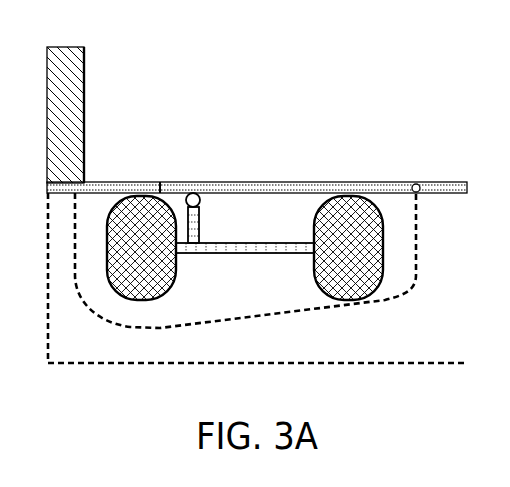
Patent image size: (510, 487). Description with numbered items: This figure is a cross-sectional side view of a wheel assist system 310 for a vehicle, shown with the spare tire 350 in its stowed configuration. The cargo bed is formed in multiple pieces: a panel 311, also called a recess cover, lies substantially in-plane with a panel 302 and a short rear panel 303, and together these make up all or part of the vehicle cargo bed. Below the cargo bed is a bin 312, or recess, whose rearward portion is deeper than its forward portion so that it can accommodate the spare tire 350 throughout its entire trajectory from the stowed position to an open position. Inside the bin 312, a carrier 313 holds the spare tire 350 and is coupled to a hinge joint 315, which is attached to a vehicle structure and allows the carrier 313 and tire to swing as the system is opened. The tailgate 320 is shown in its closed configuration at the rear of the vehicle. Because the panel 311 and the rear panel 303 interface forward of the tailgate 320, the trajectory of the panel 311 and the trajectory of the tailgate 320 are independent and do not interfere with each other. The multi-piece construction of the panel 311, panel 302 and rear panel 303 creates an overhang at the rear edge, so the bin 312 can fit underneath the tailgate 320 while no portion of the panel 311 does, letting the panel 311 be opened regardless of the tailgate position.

The tailgate 320 is at (85, 52).
The panel 311 is at (253, 182).
The rear panel 303 is at (112, 182).
The panel 302 is at (427, 182).
The bin 312 is at (130, 330).
The wheel assist system 310 is at (241, 291).
The spare tire 350 is at (372, 293).
The carrier 313 is at (285, 254).
The hinge joint 315 is at (200, 200).